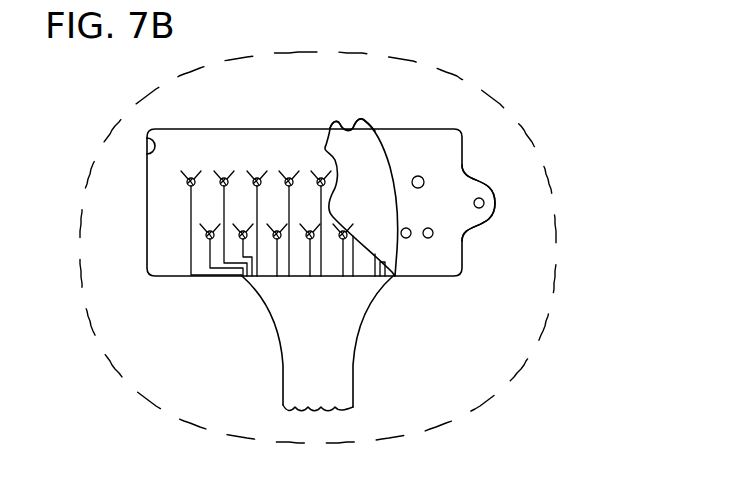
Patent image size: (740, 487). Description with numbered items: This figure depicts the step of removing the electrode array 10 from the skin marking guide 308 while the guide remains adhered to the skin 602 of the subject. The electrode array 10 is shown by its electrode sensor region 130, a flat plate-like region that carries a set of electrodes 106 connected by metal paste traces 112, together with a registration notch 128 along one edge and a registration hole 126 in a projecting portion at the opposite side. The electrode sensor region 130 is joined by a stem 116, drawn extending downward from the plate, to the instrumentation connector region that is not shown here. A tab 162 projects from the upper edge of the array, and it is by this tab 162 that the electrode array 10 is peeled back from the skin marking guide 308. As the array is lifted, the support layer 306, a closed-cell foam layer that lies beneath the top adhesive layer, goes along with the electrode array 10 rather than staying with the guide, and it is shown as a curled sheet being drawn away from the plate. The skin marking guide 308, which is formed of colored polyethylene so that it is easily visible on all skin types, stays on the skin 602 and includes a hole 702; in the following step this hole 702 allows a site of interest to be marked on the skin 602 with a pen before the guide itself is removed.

The electrode array 10 is at (258, 328).
The electrodes 106 is at (190, 187).
The metal paste traces 112 is at (190, 241).
The stem 116 is at (353, 373).
The registration hole 126 is at (485, 200).
The registration notch 128 is at (149, 143).
The electrode sensor region 130 is at (366, 122).
The tab 162 is at (330, 137).
The support layer 306 is at (388, 198).
The skin marking guide 308 is at (481, 218).
The skin 602 is at (520, 333).
The hole 702 is at (422, 177).